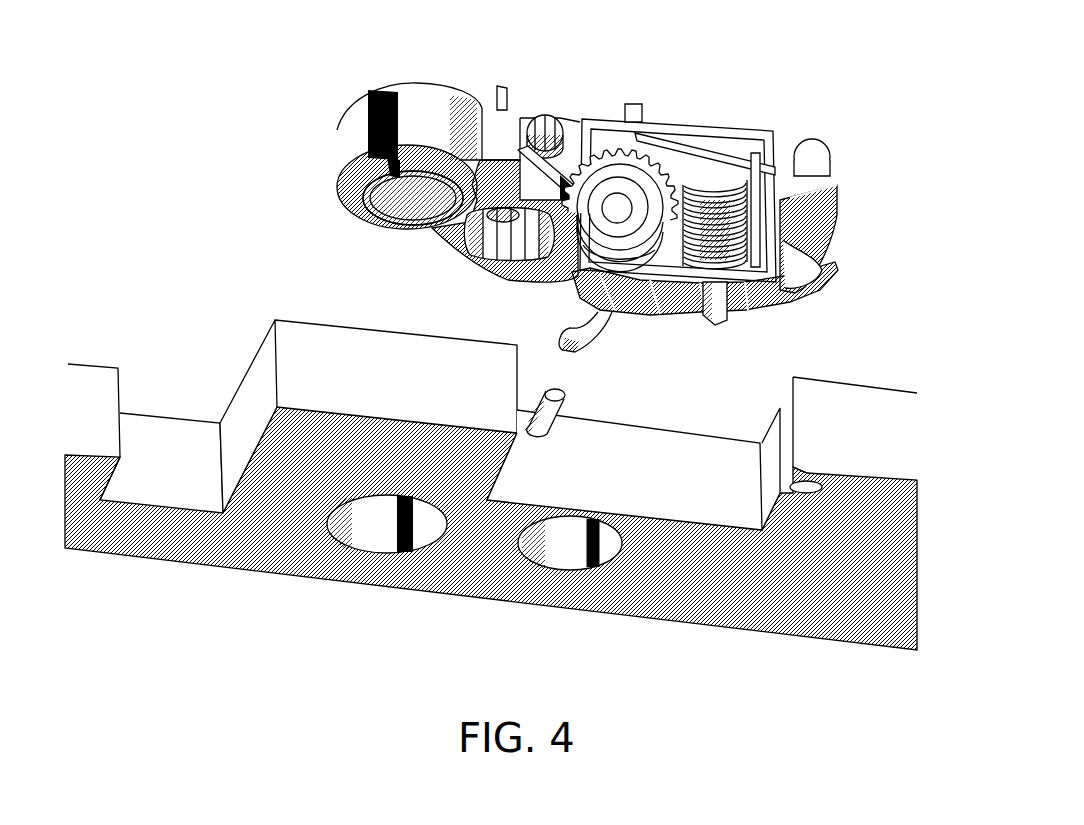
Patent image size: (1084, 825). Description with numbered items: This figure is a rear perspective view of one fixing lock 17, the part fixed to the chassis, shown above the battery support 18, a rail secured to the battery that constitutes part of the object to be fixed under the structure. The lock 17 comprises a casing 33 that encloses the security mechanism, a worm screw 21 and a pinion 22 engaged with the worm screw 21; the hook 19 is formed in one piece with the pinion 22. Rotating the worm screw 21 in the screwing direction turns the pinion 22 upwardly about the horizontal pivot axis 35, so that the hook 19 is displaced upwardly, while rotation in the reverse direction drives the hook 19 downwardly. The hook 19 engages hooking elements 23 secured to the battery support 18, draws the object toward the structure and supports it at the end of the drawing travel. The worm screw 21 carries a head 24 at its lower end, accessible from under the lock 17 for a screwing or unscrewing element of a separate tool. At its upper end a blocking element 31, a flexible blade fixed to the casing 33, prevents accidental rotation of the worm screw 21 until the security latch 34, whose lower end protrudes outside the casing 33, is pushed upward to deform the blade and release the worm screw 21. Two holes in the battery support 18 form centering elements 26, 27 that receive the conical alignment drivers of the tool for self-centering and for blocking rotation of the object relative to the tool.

The fixing lock 17 is at (573, 189).
The battery support 18 is at (297, 337).
The hook 19 is at (565, 333).
The worm screw 21 is at (827, 230).
The pinion 22 is at (645, 185).
The hooking element 23 is at (566, 392).
The head 24 is at (717, 320).
The centering element 26 is at (370, 523).
The centering element 27 is at (807, 482).
The blocking element 31 is at (690, 153).
The casing 33 is at (520, 277).
The security latch 34 is at (810, 283).
The pivot axis 35 is at (617, 212).